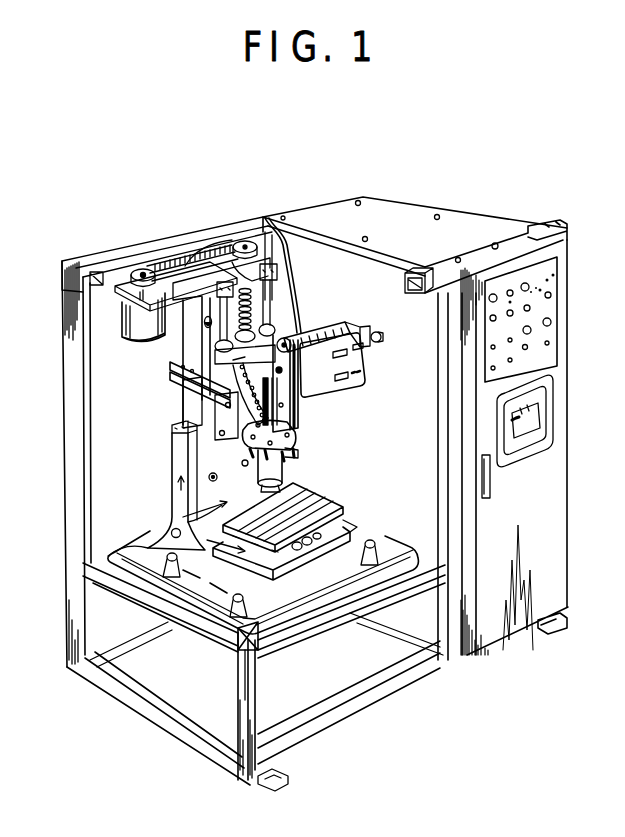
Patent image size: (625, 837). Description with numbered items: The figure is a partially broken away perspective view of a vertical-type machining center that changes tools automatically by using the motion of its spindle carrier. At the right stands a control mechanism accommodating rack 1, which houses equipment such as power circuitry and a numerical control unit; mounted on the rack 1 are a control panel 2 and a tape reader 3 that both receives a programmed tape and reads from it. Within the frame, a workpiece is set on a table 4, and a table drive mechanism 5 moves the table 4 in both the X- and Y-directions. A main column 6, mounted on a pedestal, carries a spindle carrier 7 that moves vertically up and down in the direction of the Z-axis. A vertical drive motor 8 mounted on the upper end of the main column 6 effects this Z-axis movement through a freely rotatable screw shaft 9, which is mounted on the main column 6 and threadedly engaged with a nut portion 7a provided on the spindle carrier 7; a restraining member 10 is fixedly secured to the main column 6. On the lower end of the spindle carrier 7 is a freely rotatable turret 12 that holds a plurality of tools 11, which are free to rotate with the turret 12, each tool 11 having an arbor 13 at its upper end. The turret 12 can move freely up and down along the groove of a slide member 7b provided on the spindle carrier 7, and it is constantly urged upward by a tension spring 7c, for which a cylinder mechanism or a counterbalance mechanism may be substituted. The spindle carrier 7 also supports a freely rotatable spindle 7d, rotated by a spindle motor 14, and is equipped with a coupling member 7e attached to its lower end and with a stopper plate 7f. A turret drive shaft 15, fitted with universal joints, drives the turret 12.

The control mechanism accommodating rack 1 is at (558, 472).
The control panel 2 is at (510, 280).
The tape reader 3 is at (540, 410).
The table 4 is at (288, 553).
The table drive mechanism 5 is at (312, 548).
The main column 6 is at (172, 463).
The spindle carrier 7 is at (302, 382).
The nut portion 7a is at (249, 333).
The slide member 7b is at (296, 415).
The tension spring 7c is at (302, 362).
The spindle 7d is at (292, 338).
The coupling member 7e is at (292, 435).
The stopper plate 7f is at (200, 398).
The vertical drive motor 8 is at (123, 305).
The screw shaft 9 is at (264, 218).
The restraining member 10 is at (173, 374).
The tools 11 is at (290, 462).
The turret 12 is at (172, 490).
The arbor 13 is at (298, 449).
The spindle motor 14 is at (345, 323).
The turret drive shaft 15 is at (185, 426).